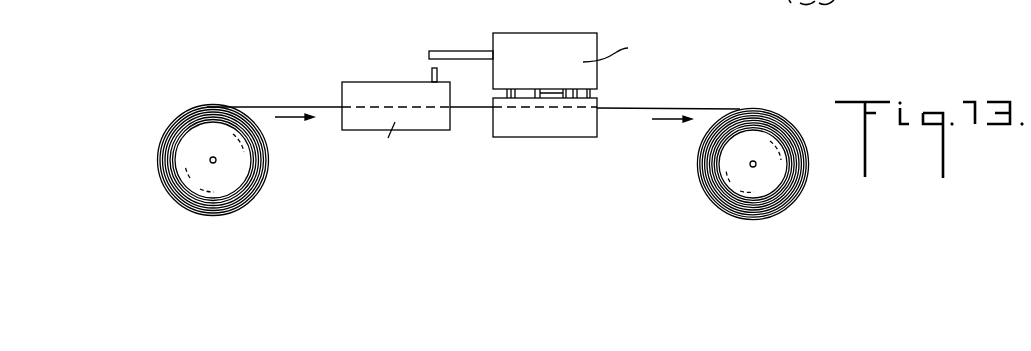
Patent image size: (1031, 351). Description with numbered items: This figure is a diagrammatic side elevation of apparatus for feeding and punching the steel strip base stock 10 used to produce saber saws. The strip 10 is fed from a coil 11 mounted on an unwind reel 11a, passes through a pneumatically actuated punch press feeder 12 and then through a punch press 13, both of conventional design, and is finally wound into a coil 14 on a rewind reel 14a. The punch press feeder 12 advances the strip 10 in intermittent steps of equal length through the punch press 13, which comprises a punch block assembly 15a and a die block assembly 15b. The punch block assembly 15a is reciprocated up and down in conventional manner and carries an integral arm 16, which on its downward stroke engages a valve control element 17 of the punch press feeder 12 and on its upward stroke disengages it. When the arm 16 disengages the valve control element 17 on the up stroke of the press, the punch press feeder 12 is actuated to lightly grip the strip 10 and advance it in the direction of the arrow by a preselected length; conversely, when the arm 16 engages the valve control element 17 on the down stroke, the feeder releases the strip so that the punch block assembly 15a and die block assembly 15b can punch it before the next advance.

The steel strip base stock 10 is at (266, 106).
The coil 11 is at (165, 145).
The unwind reel 11a is at (214, 163).
The punch press feeder 12 is at (358, 96).
The punch press 13 is at (588, 91).
The coil 14 is at (725, 202).
The rewind reel 14a is at (750, 165).
The punch block assembly 15a is at (572, 40).
The die block assembly 15b is at (518, 128).
The arm 16 is at (455, 51).
The valve control element 17 is at (431, 72).